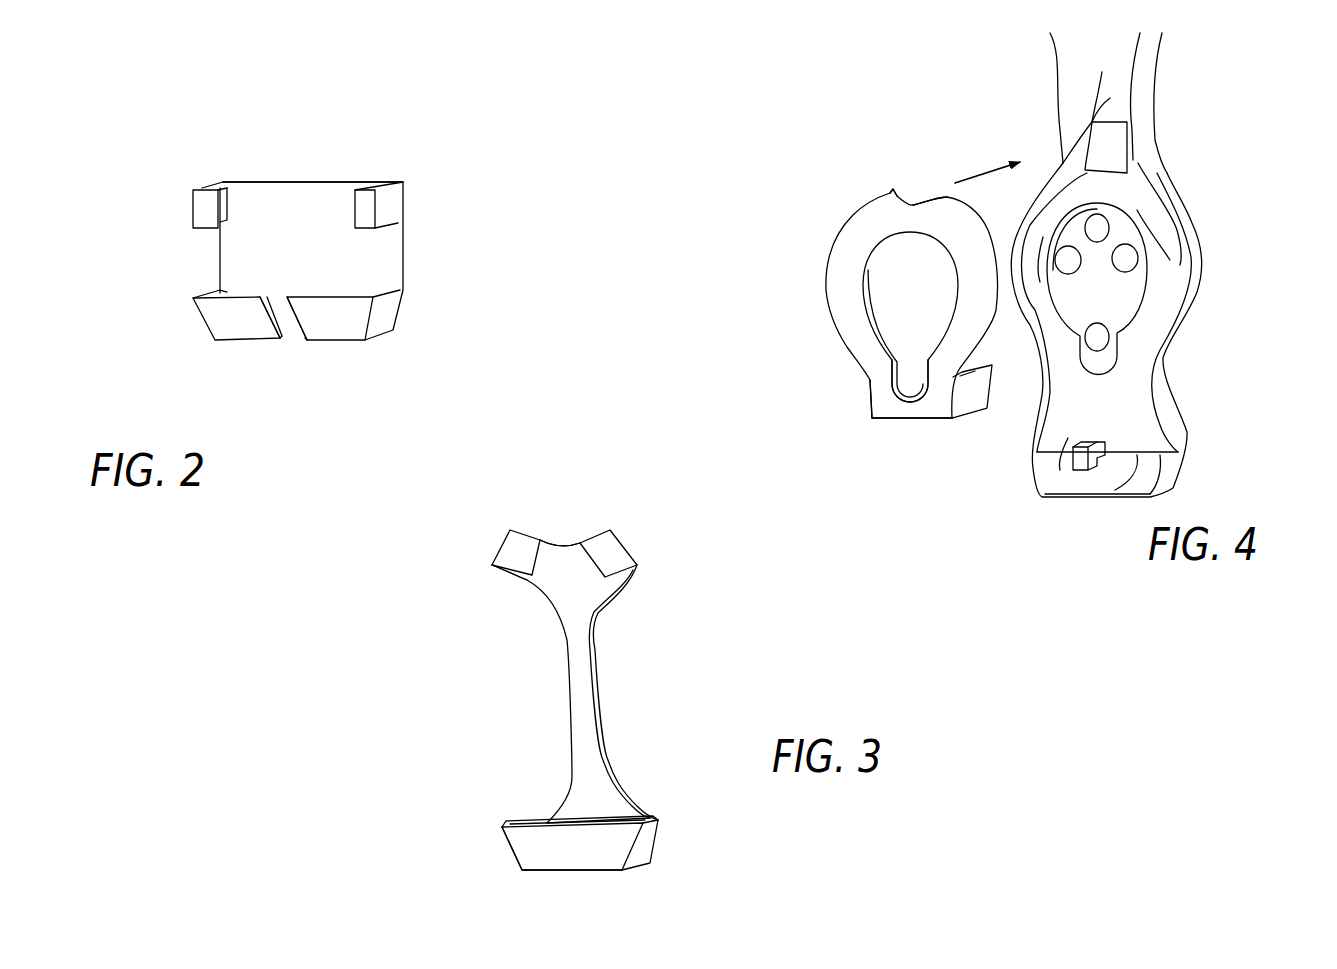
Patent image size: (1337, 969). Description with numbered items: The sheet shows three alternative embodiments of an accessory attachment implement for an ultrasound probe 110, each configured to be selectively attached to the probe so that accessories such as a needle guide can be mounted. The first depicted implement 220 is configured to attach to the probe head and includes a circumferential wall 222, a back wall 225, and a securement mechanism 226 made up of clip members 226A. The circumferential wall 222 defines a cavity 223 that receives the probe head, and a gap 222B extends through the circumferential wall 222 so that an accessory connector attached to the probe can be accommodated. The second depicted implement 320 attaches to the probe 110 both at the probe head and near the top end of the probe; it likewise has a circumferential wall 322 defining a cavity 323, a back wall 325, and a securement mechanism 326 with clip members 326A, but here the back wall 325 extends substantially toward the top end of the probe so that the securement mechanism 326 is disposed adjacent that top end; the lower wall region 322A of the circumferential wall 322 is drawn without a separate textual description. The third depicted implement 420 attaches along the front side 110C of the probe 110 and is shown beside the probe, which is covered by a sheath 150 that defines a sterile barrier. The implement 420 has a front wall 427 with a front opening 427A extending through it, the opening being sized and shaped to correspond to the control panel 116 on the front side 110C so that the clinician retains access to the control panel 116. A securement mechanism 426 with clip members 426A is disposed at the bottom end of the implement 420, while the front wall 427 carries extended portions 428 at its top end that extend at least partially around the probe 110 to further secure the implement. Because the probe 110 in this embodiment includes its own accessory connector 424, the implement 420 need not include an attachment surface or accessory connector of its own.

In FIG. 2, the accessory attachment implement 220 is at (410, 175).
In FIG. 2, the back wall 225 is at (310, 183).
In FIG. 2, the securement mechanism 226 is at (250, 177).
In FIG. 2, the clip members 226A is at (205, 208).
In FIG. 2, the cavity 223 is at (270, 288).
In FIG. 2, the circumferential wall 222 is at (383, 317).
In FIG. 2, the gap 222B is at (288, 335).
In FIG. 3, the accessory attachment implement 320 is at (638, 647).
In FIG. 3, the securement mechanism 326 is at (563, 537).
In FIG. 3, the clip members 326A is at (495, 550).
In FIG. 3, the back wall 325 is at (603, 720).
In FIG. 3, the cavity 323 is at (547, 823).
In FIG. 3, the circumferential wall 322 is at (640, 845).
In FIG. 3, the base front wall 322A is at (508, 850).
In FIG. 4, the extended portions 428 is at (943, 188).
In FIG. 4, the accessory attachment implement 420 is at (860, 245).
In FIG. 4, the front wall 427 is at (863, 282).
In FIG. 4, the front opening 427A is at (910, 315).
In FIG. 4, the securement mechanism 426 is at (923, 422).
In FIG. 4, the clip members 426A is at (968, 413).
In FIG. 4, the sheath 150 is at (1158, 123).
In FIG. 4, the ultrasound probe 110 is at (1190, 237).
In FIG. 4, the control panel 116 is at (1150, 283).
In FIG. 4, the front side 110C is at (1102, 407).
In FIG. 4, the accessory connector 424 is at (1080, 468).